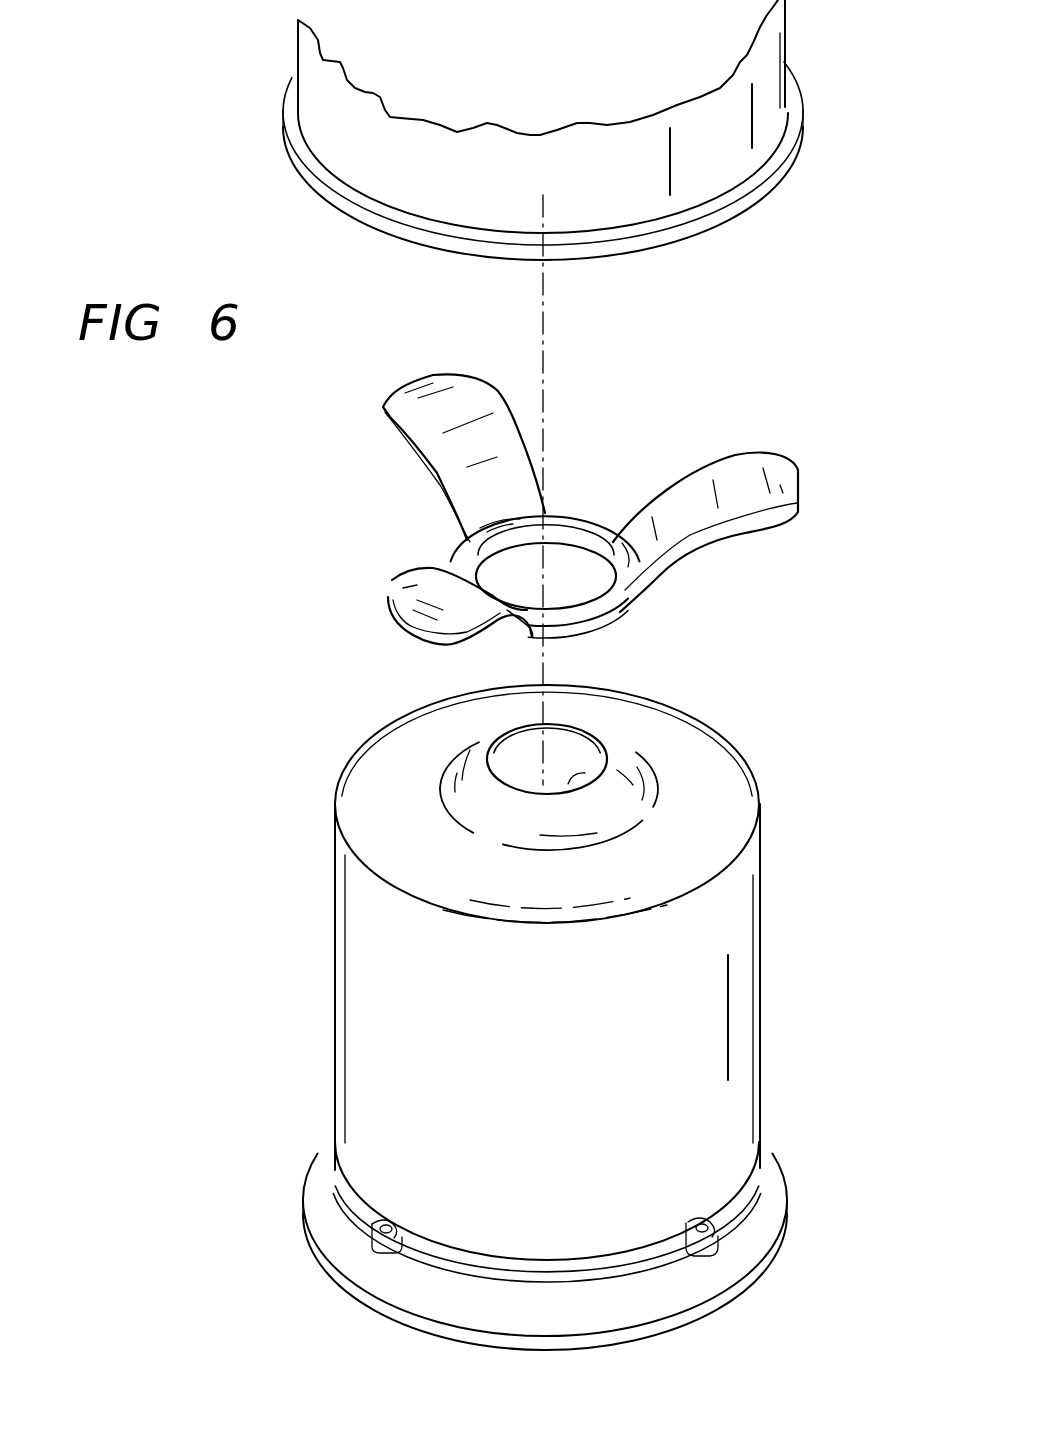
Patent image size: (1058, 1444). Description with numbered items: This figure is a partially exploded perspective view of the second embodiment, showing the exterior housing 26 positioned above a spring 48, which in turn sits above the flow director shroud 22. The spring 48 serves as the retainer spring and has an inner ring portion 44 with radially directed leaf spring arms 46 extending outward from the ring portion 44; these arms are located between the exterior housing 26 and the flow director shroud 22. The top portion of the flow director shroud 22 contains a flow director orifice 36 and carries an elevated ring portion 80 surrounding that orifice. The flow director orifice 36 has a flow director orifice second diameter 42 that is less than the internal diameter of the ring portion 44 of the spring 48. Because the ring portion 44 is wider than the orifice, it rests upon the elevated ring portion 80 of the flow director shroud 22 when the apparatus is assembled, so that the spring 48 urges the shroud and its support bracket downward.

The flow director shroud 22 is at (740, 1080).
The exterior housing 26 is at (760, 128).
The flow director orifice 36 is at (572, 774).
The flow director orifice second diameter 42 is at (437, 665).
The inner ring portion 44 is at (578, 522).
The radially directed leaf spring arms 46 is at (753, 457).
The spring 48 is at (554, 456).
The elevated ring portion 80 is at (527, 810).